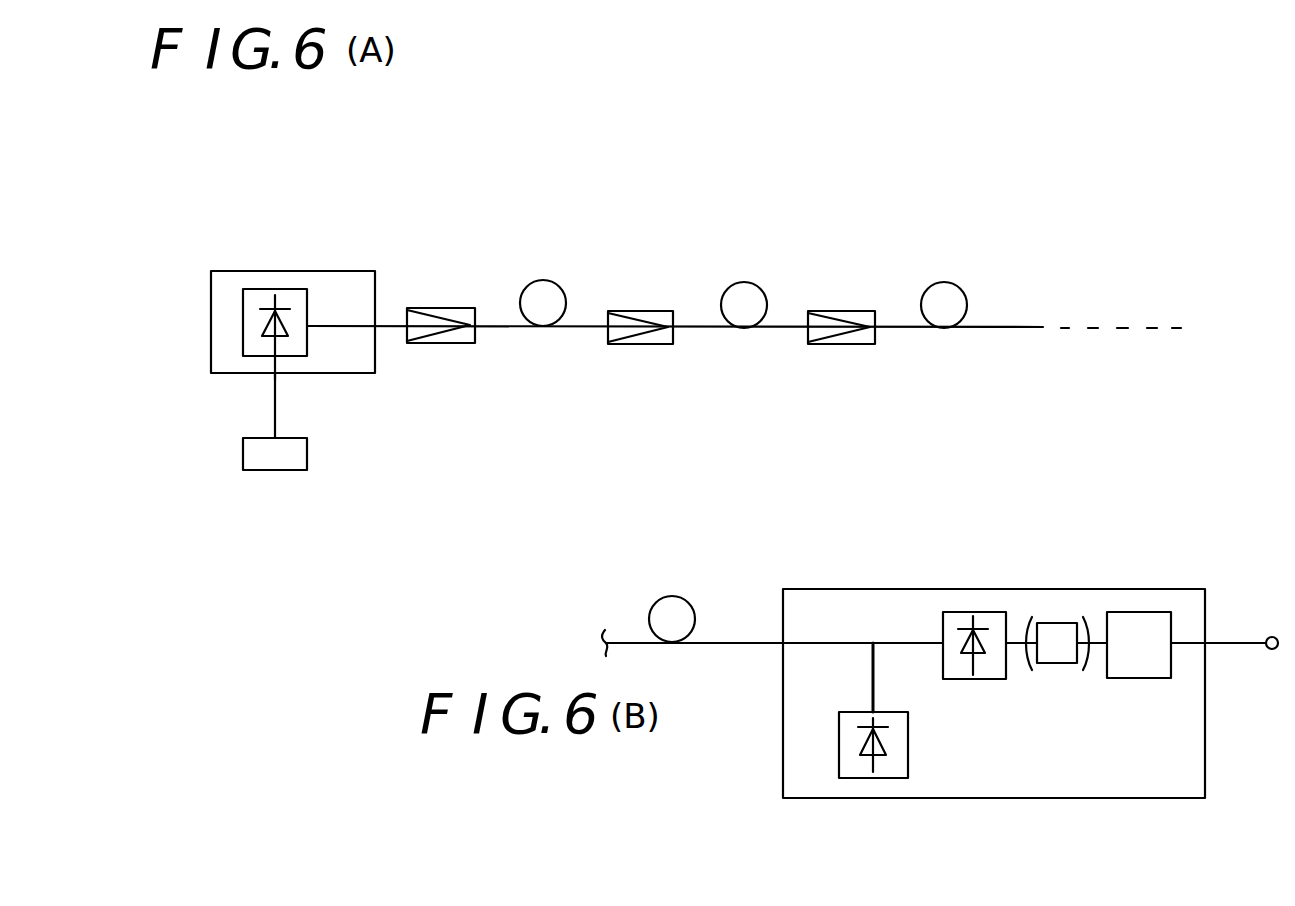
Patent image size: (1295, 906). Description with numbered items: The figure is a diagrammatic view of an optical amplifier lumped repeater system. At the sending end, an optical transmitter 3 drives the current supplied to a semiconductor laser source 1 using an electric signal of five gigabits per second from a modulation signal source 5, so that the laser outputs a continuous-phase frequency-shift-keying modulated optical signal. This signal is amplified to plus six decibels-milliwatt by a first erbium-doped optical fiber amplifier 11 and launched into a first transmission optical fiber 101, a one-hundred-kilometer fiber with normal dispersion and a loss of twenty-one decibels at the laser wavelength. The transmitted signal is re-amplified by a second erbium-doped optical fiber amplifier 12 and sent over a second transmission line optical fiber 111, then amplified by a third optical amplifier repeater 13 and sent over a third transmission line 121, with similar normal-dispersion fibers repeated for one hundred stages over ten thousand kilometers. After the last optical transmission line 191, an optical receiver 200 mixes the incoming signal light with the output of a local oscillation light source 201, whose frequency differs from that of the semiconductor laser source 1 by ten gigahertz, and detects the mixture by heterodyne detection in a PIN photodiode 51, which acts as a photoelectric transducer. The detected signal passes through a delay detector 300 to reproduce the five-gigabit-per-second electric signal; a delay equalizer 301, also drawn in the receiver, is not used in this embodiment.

In FIG. 6A, the semiconductor laser source 1 is at (297, 289).
In FIG. 6A, the optical transmitter 3 is at (257, 271).
In FIG. 6A, the modulation signal source 5 is at (298, 470).
In FIG. 6A, the first erbium-doped optical fiber amplifier 11 is at (440, 343).
In FIG. 6A, the second erbium-doped optical fiber amplifier 12 is at (640, 344).
In FIG. 6A, the third optical amplifier repeater 13 is at (848, 344).
In FIG. 6B, the PIN photodiode 51 is at (943, 612).
In FIG. 6A, the first transmission optical fiber 101 is at (550, 280).
In FIG. 6A, the second transmission line optical fiber 111 is at (760, 287).
In FIG. 6A, the third transmission line 121 is at (961, 287).
In FIG. 6B, the last optical transmission line 191 is at (683, 610).
In FIG. 6B, the optical receiver 200 is at (813, 589).
In FIG. 6B, the local oscillation light source 201 is at (851, 778).
In FIG. 6B, the delay detector 300 is at (1150, 612).
In FIG. 6B, the delay equalizer 301 is at (1058, 623).